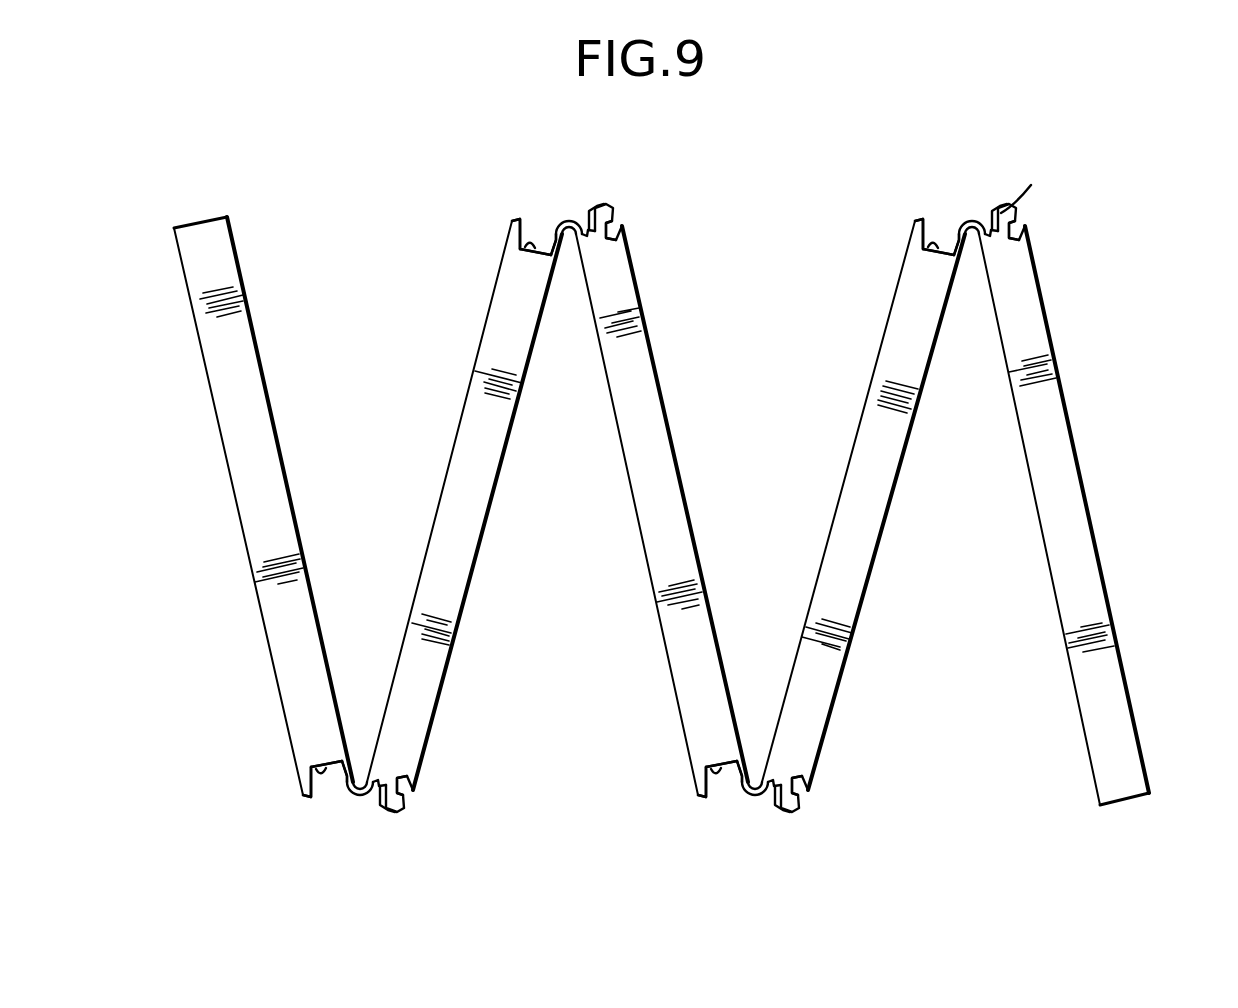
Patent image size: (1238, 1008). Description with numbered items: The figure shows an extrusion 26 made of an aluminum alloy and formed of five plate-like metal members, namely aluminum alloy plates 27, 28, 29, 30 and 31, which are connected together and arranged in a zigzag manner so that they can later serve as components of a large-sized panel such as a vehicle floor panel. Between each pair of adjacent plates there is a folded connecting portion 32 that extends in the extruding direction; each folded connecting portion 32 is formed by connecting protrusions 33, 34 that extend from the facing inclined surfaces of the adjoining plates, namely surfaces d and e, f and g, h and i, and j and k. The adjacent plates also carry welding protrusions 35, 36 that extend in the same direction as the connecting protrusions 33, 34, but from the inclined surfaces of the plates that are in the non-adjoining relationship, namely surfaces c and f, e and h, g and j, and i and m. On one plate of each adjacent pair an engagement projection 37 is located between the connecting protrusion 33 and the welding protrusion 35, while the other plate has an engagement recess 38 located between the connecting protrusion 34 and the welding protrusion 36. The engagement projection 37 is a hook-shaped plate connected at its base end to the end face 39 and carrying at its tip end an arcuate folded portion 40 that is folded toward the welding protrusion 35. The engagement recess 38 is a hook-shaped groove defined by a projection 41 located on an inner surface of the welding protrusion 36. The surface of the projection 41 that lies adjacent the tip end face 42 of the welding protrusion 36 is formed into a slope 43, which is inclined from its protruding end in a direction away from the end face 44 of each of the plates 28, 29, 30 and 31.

The extrusion 26 is at (1091, 515).
The aluminum alloy plate 27 is at (1114, 509).
The aluminum alloy plate 28 is at (863, 505).
The aluminum alloy plate 29 is at (662, 510).
The aluminum alloy plate 30 is at (464, 505).
The aluminum alloy plate 31 is at (255, 506).
The folded connecting portion 32 is at (572, 222).
The connecting protrusion 33 is at (580, 255).
The connecting protrusion 34 is at (570, 240).
The welding protrusion 35 is at (628, 228).
The welding protrusion 36 is at (518, 232).
The engagement projection 37 is at (603, 207).
The engagement recess 38 is at (523, 247).
The end face 39 is at (595, 240).
The arcuate folded portion 40 is at (1010, 218).
The projection 41 is at (537, 237).
The tip end face 42 is at (528, 236).
The slope 43 is at (532, 237).
The end face 44 is at (535, 250).
The inclined surface m is at (230, 482).
The inclined surface k is at (292, 488).
The inclined surface j is at (438, 492).
The inclined surface i is at (493, 510).
The inclined surface h is at (632, 500).
The inclined surface g is at (692, 507).
The inclined surface f is at (833, 520).
The inclined surface e is at (888, 513).
The inclined surface d is at (1032, 512).
The inclined surface c is at (1098, 525).